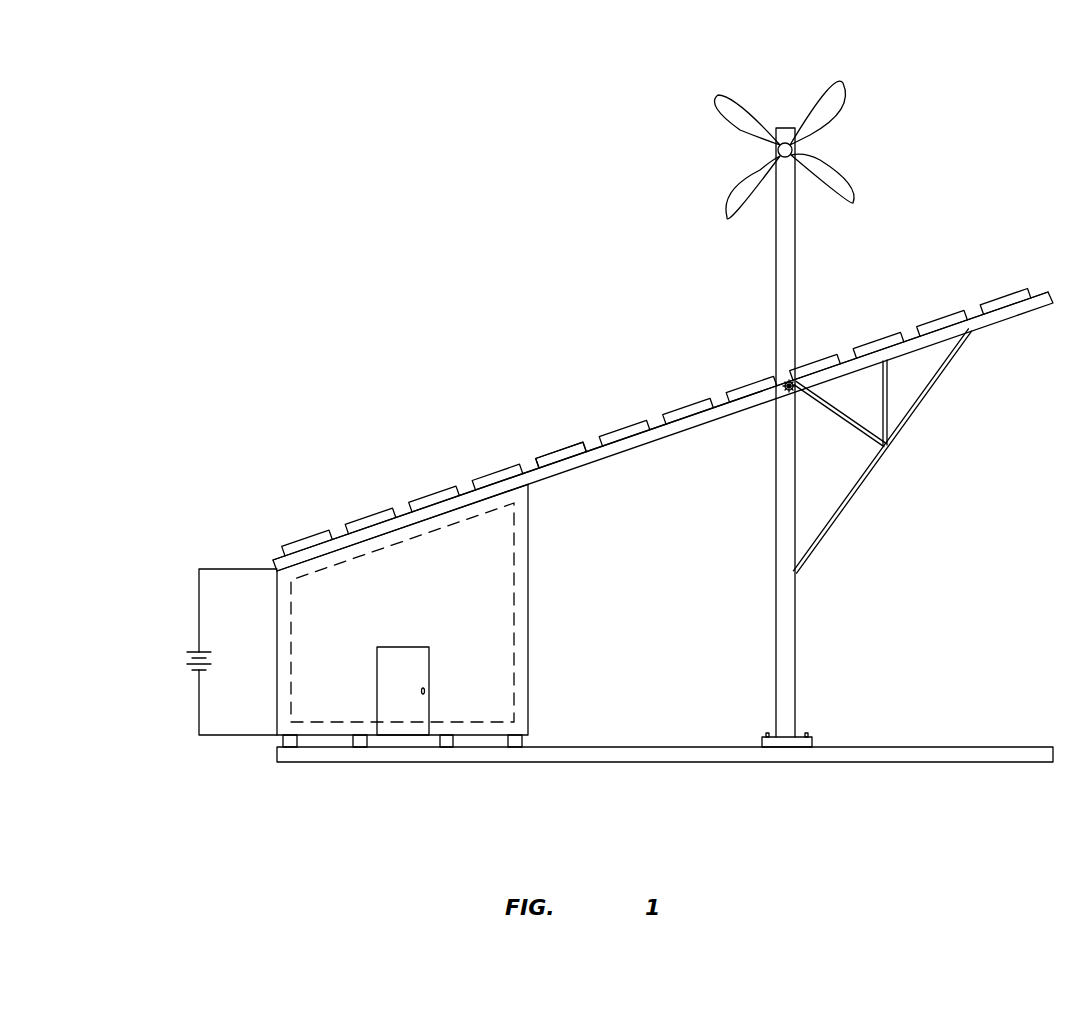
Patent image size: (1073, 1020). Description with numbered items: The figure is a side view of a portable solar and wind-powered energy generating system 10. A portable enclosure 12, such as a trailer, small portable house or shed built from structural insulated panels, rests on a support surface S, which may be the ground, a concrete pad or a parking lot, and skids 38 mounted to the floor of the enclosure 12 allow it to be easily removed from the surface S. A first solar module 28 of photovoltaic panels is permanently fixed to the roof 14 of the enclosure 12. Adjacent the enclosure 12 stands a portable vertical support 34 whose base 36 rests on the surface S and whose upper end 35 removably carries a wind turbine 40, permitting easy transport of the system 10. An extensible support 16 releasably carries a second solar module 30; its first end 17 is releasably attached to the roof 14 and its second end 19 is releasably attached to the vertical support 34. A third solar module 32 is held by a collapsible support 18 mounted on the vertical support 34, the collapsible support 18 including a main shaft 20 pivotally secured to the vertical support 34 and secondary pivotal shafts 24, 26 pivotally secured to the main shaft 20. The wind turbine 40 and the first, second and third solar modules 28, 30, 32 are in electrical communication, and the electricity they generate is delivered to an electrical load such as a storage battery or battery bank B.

The portable solar and wind-powered energy generating system 10 is at (270, 176).
The portable enclosure 12 is at (498, 578).
The roof 14 is at (503, 498).
The extensible support 16 is at (654, 448).
The first end 17 is at (558, 485).
The collapsible support 18 is at (911, 451).
The second end 19 is at (788, 398).
The main shaft 20 is at (950, 366).
The secondary pivotal shaft 24 is at (893, 418).
The secondary pivotal shaft 26 is at (847, 430).
The first solar module 28 is at (430, 446).
The second solar module 30 is at (679, 354).
The third solar module 32 is at (940, 262).
The portable vertical support 34 is at (795, 643).
The upper end 35 is at (777, 156).
The base 36 is at (812, 738).
The skids 38 is at (543, 731).
The wind turbine 40 is at (827, 148).
The support surface S is at (997, 747).
The storage battery or battery bank B is at (232, 652).